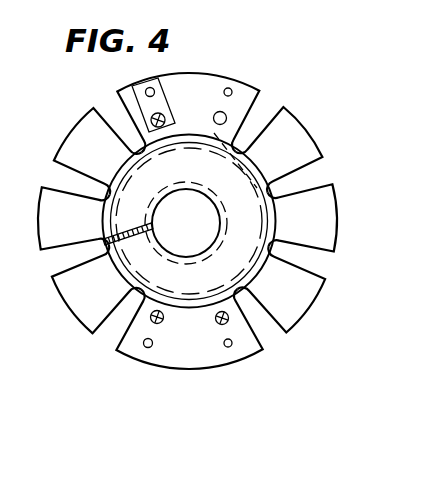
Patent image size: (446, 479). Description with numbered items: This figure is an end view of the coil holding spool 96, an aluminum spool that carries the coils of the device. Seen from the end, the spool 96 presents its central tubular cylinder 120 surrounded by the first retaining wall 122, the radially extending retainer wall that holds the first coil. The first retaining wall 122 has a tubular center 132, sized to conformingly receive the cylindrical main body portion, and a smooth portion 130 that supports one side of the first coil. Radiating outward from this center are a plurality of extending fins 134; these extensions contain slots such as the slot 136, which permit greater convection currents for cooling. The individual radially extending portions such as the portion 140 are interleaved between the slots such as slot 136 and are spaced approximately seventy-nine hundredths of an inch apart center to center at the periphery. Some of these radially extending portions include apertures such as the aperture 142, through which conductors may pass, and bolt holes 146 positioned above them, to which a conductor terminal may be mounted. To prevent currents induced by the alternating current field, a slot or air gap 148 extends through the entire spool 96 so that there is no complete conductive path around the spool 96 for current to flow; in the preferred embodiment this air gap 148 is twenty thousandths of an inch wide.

The spool 96 is at (362, 96).
The central tubular cylinder 120 is at (221, 212).
The first retaining wall 122 is at (248, 84).
The smooth portion 130 is at (245, 210).
The tubular center 132 is at (198, 237).
The extending fins 134 is at (302, 137).
The slot 136 is at (305, 260).
The radially extending portion 140 is at (73, 137).
The aperture 142 is at (172, 344).
The bolt hole 146 is at (154, 358).
The air gap 148 is at (103, 245).